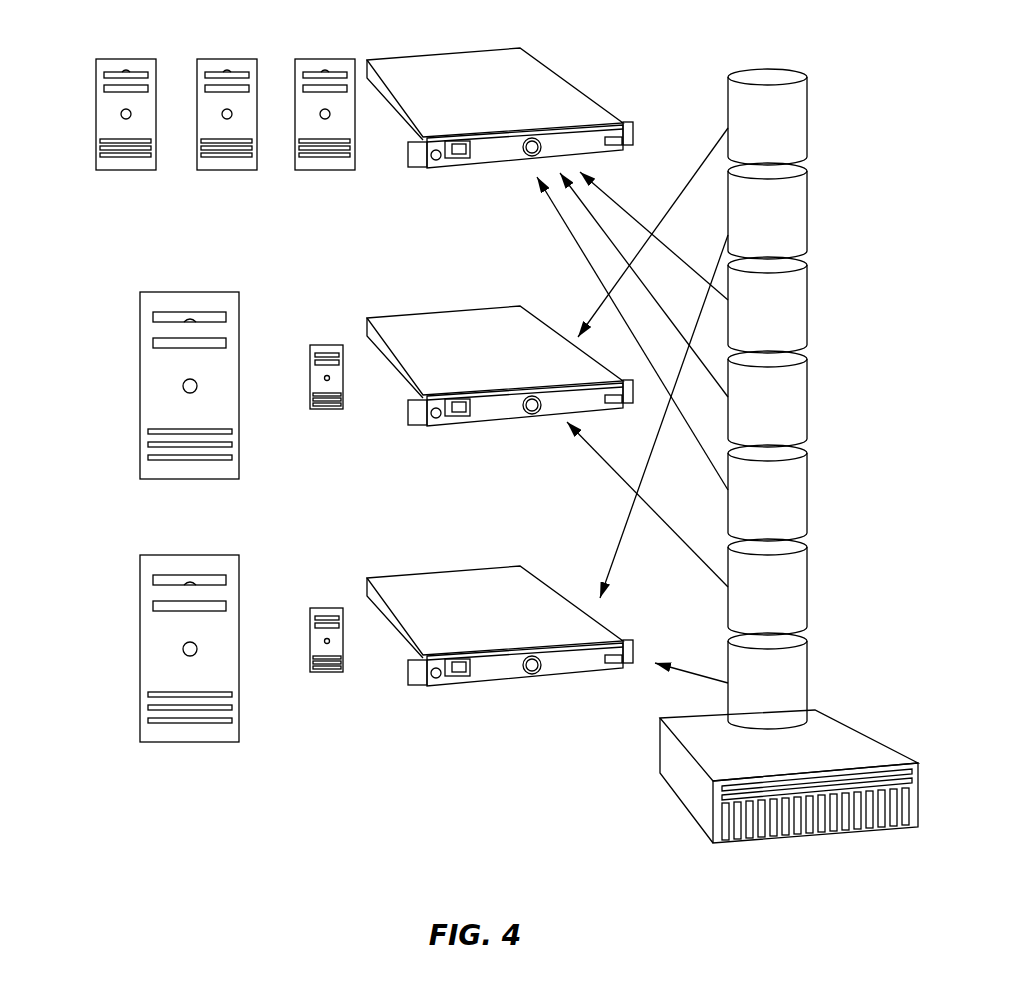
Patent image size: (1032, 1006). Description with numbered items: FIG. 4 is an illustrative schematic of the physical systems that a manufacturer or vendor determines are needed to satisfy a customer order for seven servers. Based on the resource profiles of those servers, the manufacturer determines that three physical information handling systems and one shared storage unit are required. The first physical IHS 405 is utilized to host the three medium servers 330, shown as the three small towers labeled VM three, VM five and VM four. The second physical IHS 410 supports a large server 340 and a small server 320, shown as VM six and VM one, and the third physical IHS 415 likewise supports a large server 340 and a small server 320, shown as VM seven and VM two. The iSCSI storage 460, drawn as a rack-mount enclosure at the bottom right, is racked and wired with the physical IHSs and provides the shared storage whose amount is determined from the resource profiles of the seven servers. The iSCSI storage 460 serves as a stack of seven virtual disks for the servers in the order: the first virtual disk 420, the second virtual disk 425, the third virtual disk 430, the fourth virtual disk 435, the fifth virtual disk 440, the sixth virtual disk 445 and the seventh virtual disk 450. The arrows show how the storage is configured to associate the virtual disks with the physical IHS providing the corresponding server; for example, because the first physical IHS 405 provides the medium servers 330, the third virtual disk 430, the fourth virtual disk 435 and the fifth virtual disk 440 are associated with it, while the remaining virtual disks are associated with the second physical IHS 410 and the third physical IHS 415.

The medium server 330 is at (325, 59).
The large server 340 is at (190, 292).
The small server 320 is at (327, 345).
The first physical IHS 405 is at (442, 68).
The second physical IHS 410 is at (442, 326).
The third physical IHS 415 is at (442, 586).
The virtual disk #1 420 is at (808, 115).
The virtual disk #2 425 is at (808, 209).
The virtual disk #3 430 is at (808, 303).
The virtual disk #4 435 is at (808, 397).
The virtual disk #5 440 is at (808, 491).
The virtual disk #6 445 is at (808, 585).
The virtual disk #7 450 is at (808, 679).
The iSCSI storage 460 is at (683, 770).